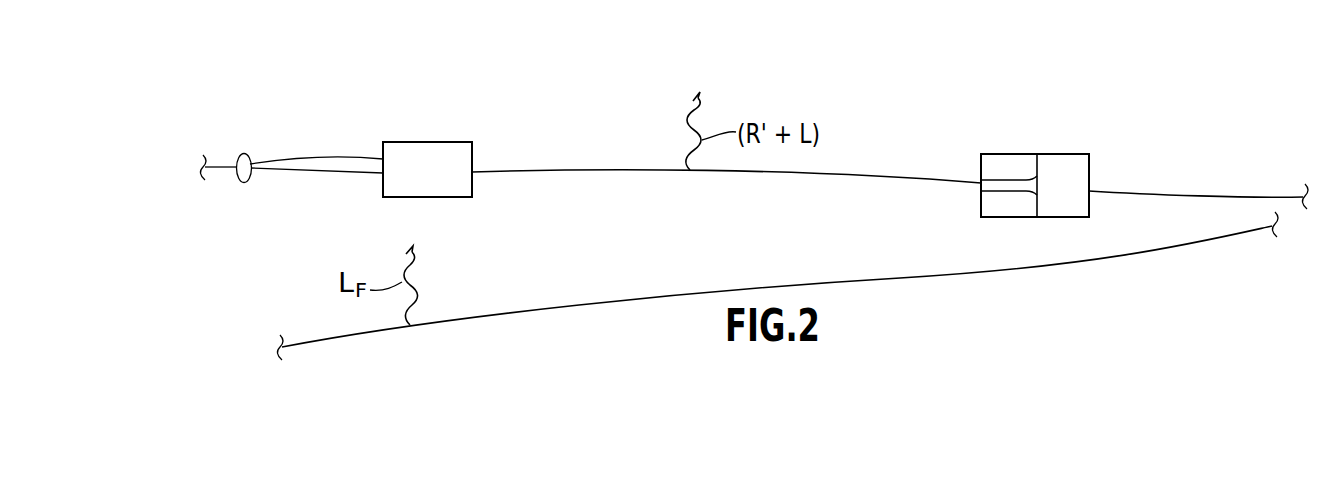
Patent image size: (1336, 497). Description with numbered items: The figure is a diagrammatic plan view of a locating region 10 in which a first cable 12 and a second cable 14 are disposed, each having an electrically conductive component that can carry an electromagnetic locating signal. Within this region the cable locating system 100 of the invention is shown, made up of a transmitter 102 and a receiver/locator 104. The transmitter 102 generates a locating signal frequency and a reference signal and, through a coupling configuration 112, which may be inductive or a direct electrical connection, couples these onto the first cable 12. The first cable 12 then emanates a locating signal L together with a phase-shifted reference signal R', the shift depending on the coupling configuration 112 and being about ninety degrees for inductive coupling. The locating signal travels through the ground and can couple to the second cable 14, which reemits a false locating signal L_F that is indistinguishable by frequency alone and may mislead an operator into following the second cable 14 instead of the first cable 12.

The locating region 10 is at (1025, 86).
The first cable 12 is at (505, 171).
The second cable 14 is at (552, 304).
The cable locating system 100 is at (1070, 151).
The transmitter 102 is at (453, 180).
The receiver/locator 104 is at (1050, 154).
The coupling configuration 112 is at (246, 184).